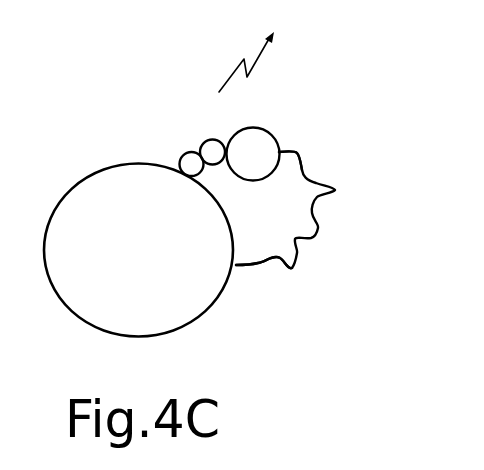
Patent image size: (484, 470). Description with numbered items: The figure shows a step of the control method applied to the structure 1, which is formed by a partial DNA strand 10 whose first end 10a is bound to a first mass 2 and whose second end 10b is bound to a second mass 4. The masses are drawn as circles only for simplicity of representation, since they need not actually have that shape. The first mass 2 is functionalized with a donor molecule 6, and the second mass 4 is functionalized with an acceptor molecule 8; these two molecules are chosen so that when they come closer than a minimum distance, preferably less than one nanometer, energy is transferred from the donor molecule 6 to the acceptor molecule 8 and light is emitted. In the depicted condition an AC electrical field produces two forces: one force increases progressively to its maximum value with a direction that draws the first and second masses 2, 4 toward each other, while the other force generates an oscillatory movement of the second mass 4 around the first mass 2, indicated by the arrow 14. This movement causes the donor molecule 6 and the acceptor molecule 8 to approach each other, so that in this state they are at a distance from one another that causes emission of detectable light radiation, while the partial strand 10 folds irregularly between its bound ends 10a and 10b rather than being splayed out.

The structure 1 is at (124, 124).
The first mass 2 is at (88, 200).
The second mass 4 is at (273, 147).
The donor molecule 6 is at (190, 161).
The acceptor molecule 8 is at (212, 141).
The partial strand 10 is at (296, 264).
The first end of the partial strand 10a is at (241, 278).
The second end of the partial strand 10b is at (294, 146).
The direction of movement arrow 14 is at (240, 68).